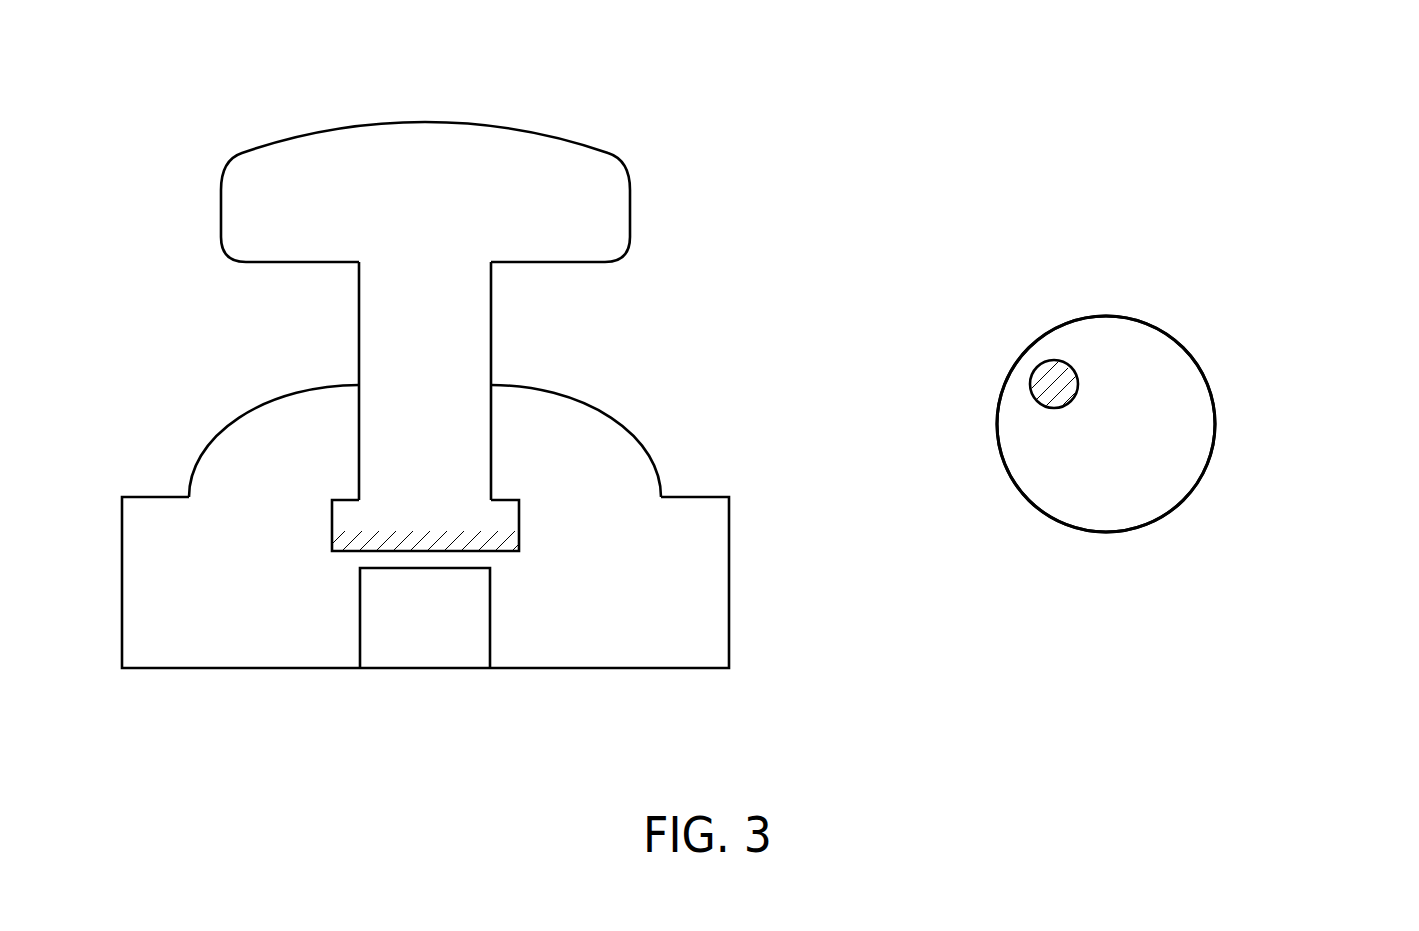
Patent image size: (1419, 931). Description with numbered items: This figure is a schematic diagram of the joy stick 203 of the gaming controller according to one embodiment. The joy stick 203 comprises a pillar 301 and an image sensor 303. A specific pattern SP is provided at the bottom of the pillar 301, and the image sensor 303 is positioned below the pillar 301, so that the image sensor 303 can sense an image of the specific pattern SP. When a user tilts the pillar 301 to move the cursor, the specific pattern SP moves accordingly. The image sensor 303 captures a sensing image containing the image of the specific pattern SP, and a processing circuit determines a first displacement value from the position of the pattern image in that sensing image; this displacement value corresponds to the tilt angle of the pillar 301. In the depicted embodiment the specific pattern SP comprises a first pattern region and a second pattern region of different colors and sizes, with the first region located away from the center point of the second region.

The joy stick 203 is at (623, 112).
The pillar 301 is at (465, 328).
The image sensor 303 is at (360, 622).
The specific pattern SP is at (503, 550).